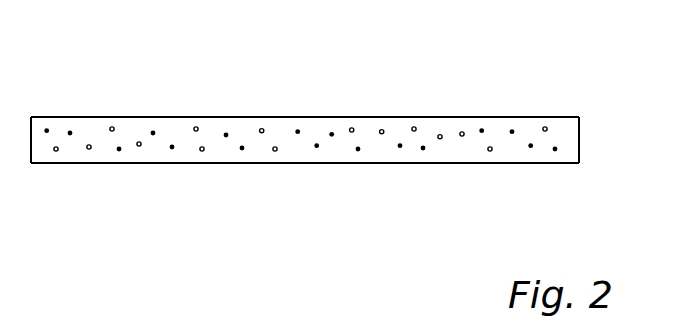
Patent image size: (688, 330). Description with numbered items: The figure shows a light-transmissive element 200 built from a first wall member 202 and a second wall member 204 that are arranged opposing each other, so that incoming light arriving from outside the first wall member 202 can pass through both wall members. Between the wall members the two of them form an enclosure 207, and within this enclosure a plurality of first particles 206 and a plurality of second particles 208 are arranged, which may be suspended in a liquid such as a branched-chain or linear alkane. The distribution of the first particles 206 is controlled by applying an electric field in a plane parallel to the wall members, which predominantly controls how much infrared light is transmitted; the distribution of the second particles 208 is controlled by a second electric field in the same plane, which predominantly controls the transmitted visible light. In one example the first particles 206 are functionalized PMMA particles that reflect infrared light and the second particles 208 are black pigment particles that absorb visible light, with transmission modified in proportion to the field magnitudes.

The light-transmissive element 200 is at (305, 140).
The first wall member 202 is at (106, 117).
The second wall member 204 is at (58, 163).
The first particles 206 is at (489, 152).
The enclosure 207 is at (318, 128).
The second particles 208 is at (531, 149).